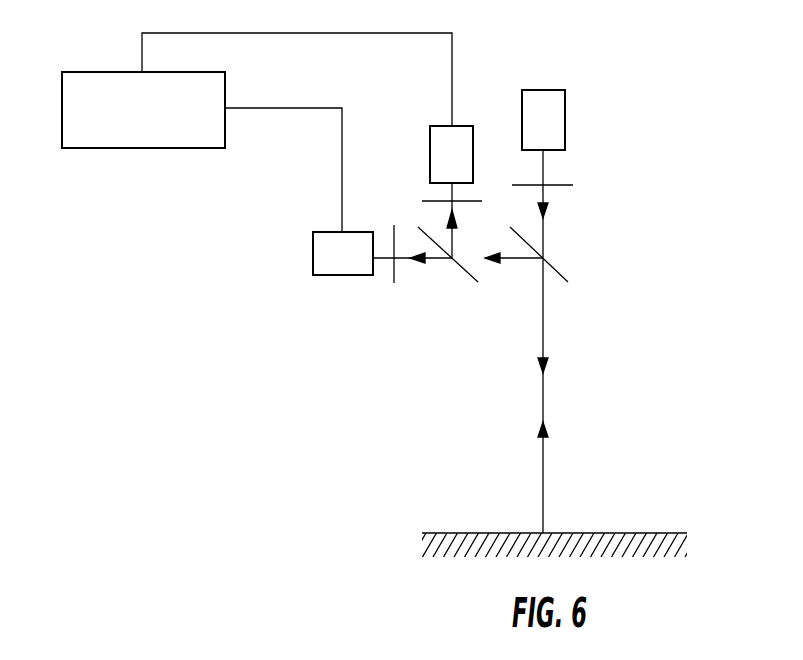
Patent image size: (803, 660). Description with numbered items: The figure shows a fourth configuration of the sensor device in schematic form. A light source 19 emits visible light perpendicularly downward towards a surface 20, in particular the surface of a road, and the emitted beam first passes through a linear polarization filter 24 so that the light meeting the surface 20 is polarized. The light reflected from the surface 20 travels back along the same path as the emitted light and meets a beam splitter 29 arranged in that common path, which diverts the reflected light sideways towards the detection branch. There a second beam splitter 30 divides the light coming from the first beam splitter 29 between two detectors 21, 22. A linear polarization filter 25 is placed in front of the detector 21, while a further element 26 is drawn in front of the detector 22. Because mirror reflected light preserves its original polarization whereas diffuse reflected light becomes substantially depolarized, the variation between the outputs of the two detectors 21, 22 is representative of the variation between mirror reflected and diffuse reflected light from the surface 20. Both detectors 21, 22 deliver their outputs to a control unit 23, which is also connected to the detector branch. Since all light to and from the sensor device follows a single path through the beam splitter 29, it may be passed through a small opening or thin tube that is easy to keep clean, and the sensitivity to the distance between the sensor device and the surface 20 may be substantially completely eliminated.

The light source 19 is at (550, 108).
The surface 20 is at (466, 533).
The detector 21 is at (443, 126).
The detector 22 is at (350, 262).
The control unit 23 is at (105, 72).
The linear polarization filter 24 is at (563, 188).
The linear polarization filter 25 is at (428, 201).
The lens 26 is at (397, 270).
The beam splitter 29 is at (562, 272).
The beam splitter 30 is at (456, 263).